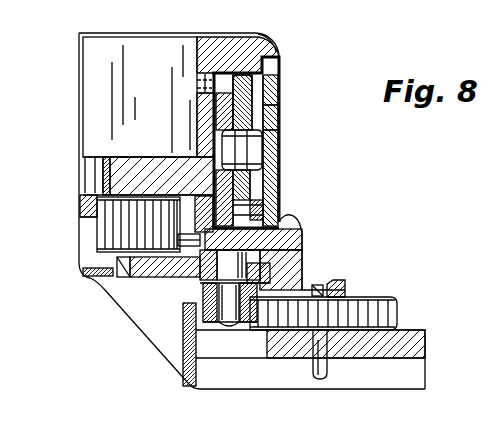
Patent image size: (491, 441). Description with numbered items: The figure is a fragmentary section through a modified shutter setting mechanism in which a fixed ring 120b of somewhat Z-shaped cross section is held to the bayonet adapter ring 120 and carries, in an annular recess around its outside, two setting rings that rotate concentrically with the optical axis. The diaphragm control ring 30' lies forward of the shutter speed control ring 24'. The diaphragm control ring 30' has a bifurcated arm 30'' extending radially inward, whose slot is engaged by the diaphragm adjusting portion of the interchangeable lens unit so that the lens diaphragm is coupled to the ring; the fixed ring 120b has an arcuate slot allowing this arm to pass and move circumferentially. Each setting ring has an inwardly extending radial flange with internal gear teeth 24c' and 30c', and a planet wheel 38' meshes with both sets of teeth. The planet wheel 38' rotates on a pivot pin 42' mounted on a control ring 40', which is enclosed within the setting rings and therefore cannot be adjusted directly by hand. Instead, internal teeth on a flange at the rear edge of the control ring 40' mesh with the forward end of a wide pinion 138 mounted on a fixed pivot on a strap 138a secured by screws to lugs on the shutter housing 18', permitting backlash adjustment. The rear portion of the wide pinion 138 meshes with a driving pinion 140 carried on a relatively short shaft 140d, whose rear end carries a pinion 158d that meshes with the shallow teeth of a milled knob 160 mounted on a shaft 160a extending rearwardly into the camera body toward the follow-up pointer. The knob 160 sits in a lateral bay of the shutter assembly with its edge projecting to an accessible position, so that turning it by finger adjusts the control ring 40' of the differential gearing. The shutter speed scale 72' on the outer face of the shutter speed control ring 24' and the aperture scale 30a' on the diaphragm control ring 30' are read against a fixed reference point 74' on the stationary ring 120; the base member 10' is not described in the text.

The ring 120b is at (234, 43).
The gear teeth 30c' is at (285, 30).
The diaphragm control ring 30' is at (266, 130).
The diaphragm aperture scale 30a' is at (295, 87).
The planet wheel 38' is at (291, 115).
The shutter speed control ring 24' is at (296, 150).
The shutter speed scale 72' is at (272, 151).
The gear teeth 24c' is at (285, 208).
The fixed reference point 74' is at (275, 252).
The pinion 140 is at (301, 256).
The bayonet adapter ring 120 is at (341, 287).
The milled knob 160 is at (376, 308).
The base plate 10' is at (324, 347).
The shaft 160a is at (318, 382).
The shutter housing 18' is at (162, 346).
The pinion 158d is at (198, 303).
The shaft 140d is at (201, 283).
The strap 138a is at (120, 278).
The wide pinion 138 is at (110, 232).
The bifurcated arm 30'' is at (174, 73).
The control ring 40' is at (192, 150).
The pivot pin 42' is at (201, 150).